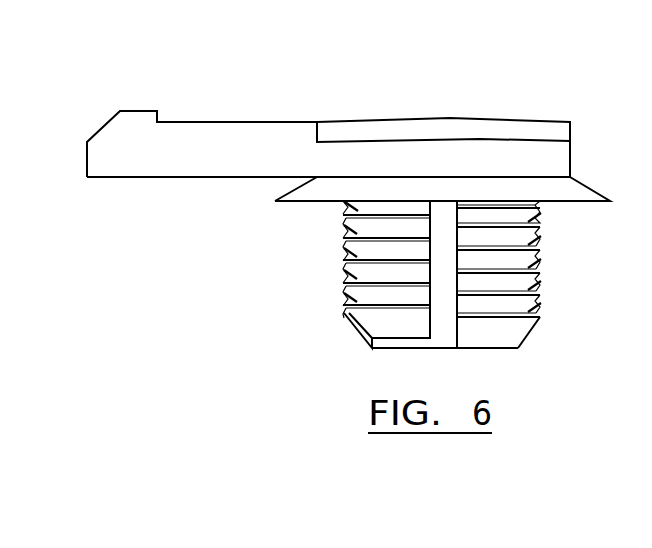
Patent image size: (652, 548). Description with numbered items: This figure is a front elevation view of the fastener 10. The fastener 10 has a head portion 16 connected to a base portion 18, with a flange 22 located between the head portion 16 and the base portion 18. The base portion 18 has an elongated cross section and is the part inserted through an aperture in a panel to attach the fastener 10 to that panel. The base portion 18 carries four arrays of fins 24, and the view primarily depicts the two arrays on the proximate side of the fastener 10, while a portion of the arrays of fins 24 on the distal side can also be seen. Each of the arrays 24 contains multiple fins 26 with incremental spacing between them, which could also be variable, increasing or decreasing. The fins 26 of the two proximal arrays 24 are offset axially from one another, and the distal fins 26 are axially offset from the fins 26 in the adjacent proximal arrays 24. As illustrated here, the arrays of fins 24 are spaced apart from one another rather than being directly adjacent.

The fastener 10 is at (176, 68).
The head portion 16 is at (597, 141).
The base portion 18 is at (445, 349).
The flange 22 is at (312, 183).
The arrays of fins 24 is at (360, 362).
The fins 26 is at (371, 303).